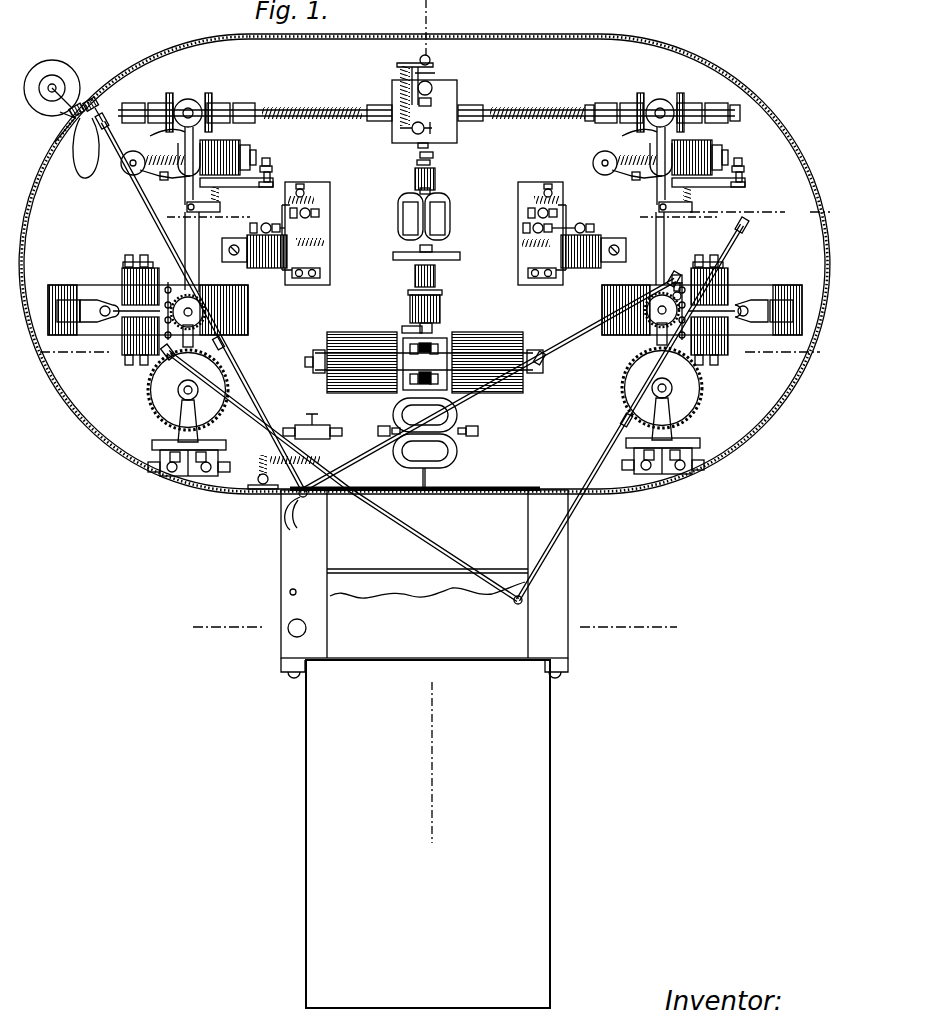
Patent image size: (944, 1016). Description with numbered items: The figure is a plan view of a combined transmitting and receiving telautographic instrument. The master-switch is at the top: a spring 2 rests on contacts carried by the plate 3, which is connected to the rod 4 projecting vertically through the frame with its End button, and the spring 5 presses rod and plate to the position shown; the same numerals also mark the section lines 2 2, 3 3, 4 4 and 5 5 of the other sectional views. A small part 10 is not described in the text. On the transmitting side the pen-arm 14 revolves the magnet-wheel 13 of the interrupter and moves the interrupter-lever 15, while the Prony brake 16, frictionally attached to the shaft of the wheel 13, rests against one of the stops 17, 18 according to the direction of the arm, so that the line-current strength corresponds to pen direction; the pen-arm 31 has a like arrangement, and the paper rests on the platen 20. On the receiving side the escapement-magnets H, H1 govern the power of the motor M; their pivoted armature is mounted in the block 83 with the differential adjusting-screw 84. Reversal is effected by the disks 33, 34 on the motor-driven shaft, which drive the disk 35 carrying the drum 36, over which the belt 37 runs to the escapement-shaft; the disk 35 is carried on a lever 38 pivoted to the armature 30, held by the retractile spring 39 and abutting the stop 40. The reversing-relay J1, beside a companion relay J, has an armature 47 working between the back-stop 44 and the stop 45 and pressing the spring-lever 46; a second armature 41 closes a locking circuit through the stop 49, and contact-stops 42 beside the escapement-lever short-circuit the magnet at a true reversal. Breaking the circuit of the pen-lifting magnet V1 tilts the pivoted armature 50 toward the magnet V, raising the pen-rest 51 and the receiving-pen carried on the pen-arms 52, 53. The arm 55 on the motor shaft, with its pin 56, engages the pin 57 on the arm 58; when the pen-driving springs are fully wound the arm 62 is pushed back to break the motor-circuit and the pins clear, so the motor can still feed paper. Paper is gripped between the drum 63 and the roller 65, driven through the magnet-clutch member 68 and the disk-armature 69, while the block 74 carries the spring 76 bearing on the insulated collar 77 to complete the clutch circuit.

The master-switch spring 2 is at (437, 425).
The plate 3 is at (425, 365).
The rod 4 is at (45, 64).
The spring 5 is at (433, 625).
The pivot pin 10 is at (298, 584).
The magnet-wheel 13 is at (425, 389).
The pen-arm 14 is at (440, 548).
The interrupter-lever 15 is at (426, 420).
The Prony brake 16 is at (426, 459).
The stop 17 is at (409, 470).
The stop 18 is at (690, 462).
The platen 20 is at (427, 587).
The armature 30 is at (187, 204).
The pen-arm 31 is at (597, 455).
The disk 33 is at (212, 98).
The disk 34 is at (167, 96).
The disk 35 is at (192, 100).
The drum 36 is at (187, 108).
The belt 37 is at (196, 250).
The lever 38 is at (160, 134).
The retractile spring 39 is at (158, 156).
The stop 40 is at (164, 178).
The second armature 41 is at (236, 187).
The contact-stop 42 is at (678, 274).
The back-stop 44 is at (330, 228).
The stop 45 is at (319, 213).
The spring-lever 46 is at (290, 195).
The armature 47 is at (556, 256).
The stop 49 is at (266, 188).
The pivoted armature 50 is at (428, 443).
The pen-rest 51 is at (500, 488).
The pen-arm 52 is at (242, 374).
The pen-arm 53 is at (592, 323).
The arm 55 is at (415, 170).
The pin 56 is at (432, 160).
The pin 57 is at (440, 148).
The arm 58 is at (418, 146).
The arm 62 is at (430, 63).
The drum 63 is at (425, 362).
The roller 65 is at (424, 361).
The magnet-clutch member 68 is at (440, 310).
The disk-armature 69 is at (442, 292).
The block 74 is at (403, 378).
The spring 76 is at (405, 328).
The collar 77 is at (432, 330).
The block 83 is at (97, 324).
The differential adjusting-screw 84 is at (782, 335).
The motor M is at (431, 237).
The escapement-magnet H is at (728, 283).
The escapement-magnet H1 is at (120, 280).
The switch panel J is at (572, 233).
The reversing-relay J1 is at (276, 233).
The pen-lifting magnet V is at (398, 443).
The pen-lifting magnet V1 is at (398, 405).